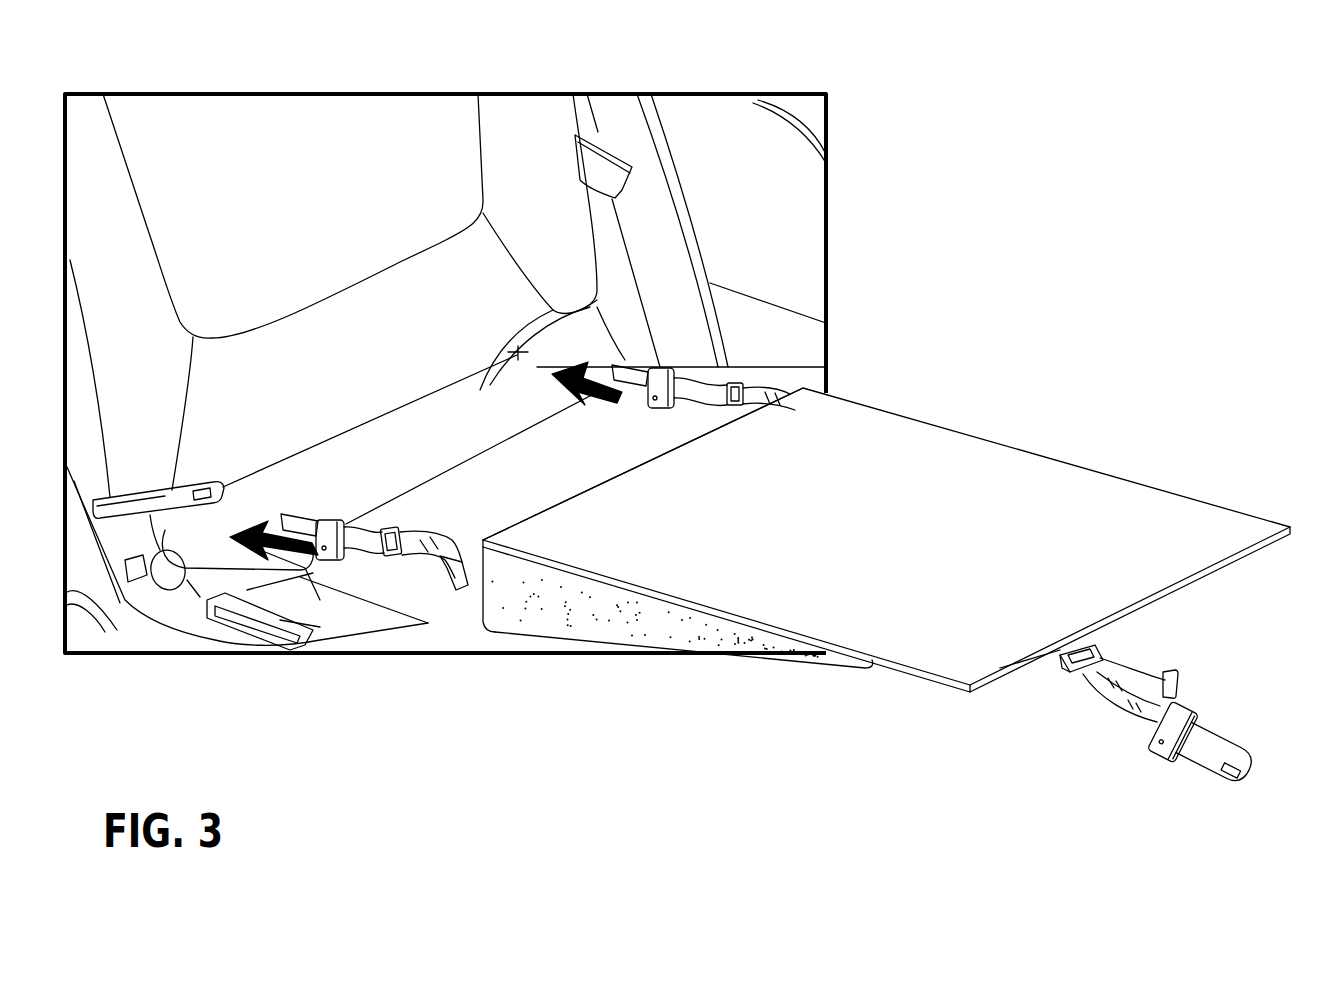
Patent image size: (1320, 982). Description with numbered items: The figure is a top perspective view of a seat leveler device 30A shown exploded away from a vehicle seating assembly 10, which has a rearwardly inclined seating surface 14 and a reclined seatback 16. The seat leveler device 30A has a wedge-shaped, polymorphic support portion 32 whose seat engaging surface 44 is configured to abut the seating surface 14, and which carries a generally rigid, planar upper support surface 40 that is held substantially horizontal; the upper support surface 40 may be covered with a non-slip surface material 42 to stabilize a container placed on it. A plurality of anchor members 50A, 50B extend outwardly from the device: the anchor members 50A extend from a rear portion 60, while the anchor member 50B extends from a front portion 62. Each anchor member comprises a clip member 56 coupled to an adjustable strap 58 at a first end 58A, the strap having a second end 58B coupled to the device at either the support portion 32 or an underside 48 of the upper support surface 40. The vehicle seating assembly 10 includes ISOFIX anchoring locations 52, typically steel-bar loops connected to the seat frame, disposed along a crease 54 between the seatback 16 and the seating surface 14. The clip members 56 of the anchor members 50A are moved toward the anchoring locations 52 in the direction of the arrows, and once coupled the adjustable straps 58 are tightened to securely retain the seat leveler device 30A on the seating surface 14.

The vehicle seating assembly 10 is at (560, 78).
The seatback 16 is at (360, 165).
The seating surface 14 is at (576, 458).
The seat leveler device 30A is at (886, 548).
The support portion 32 is at (703, 668).
The upper support surface 40 is at (1085, 465).
The non-slip surface material 42 is at (1252, 540).
The seat engaging surface 44 is at (773, 664).
The underside of the upper support surface 48 is at (920, 675).
The anchor member 50A is at (382, 570).
The anchor member 50B is at (1180, 770).
The anchoring locations 52 is at (194, 498).
The crease 54 is at (373, 426).
The clip members 56 is at (333, 570).
The adjustable straps 58 is at (433, 578).
The first end 58A is at (357, 523).
The second end 58B is at (473, 563).
The rear portion 60 is at (601, 482).
The front portion 62 is at (1018, 662).